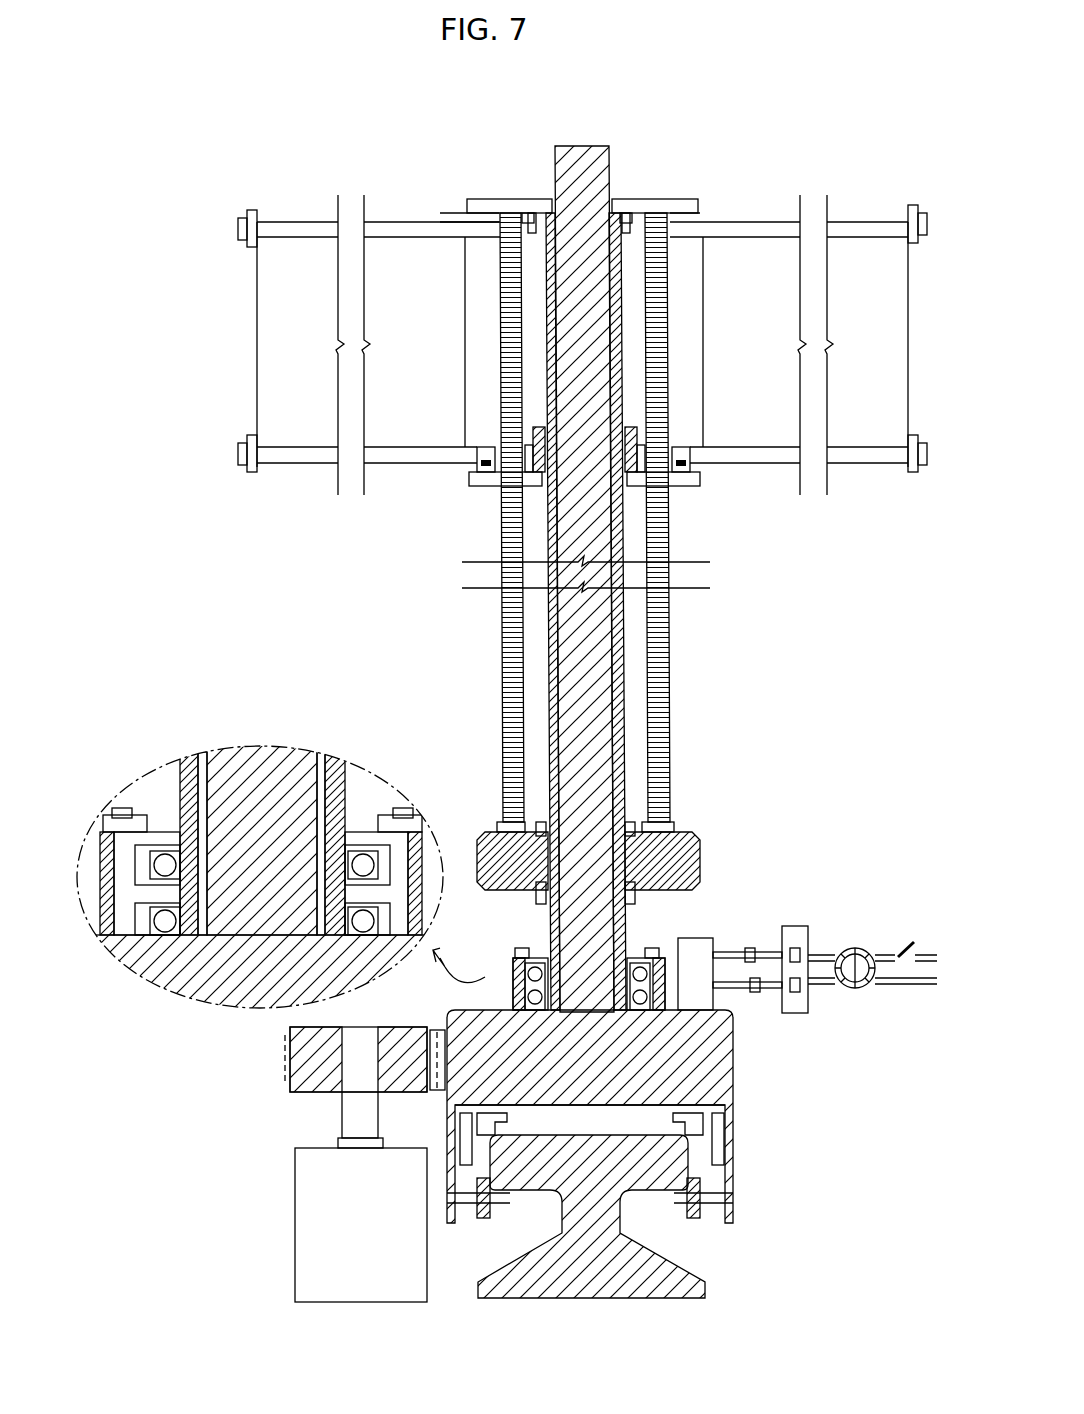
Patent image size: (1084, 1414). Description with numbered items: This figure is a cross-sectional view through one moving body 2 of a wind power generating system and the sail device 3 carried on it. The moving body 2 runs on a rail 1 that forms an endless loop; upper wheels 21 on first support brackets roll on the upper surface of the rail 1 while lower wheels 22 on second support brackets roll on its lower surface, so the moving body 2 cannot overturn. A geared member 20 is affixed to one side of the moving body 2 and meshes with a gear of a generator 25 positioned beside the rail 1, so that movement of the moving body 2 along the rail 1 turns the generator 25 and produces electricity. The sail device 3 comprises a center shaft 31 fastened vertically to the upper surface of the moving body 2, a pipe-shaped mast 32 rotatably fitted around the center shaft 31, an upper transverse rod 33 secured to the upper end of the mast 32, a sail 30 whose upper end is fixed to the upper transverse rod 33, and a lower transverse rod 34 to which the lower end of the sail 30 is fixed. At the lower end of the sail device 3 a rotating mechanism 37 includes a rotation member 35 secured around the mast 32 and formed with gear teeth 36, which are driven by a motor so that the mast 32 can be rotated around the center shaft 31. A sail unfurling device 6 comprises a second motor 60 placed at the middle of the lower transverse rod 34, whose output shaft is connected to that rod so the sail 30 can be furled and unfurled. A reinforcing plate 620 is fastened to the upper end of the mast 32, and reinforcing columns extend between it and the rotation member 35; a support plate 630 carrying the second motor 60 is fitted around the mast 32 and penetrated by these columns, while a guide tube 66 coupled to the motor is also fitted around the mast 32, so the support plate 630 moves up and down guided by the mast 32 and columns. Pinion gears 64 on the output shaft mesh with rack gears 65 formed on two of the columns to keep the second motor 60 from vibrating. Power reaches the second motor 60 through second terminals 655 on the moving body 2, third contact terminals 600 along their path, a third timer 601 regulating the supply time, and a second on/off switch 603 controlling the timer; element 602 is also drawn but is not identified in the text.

The rail 1 is at (713, 1289).
The moving body 2 is at (738, 1076).
The sail device 3 is at (376, 568).
The sail unfurling device 6 is at (464, 514).
The geared member 20 is at (432, 1024).
The upper wheel 21 is at (703, 1150).
The lower wheel 22 is at (700, 1212).
The generator 25 is at (295, 1213).
The sail 30 is at (257, 345).
The center shaft 31 is at (581, 152).
The mast 32 is at (620, 290).
The upper transverse rod 33 is at (290, 222).
The lower transverse rod 34 is at (306, 467).
The rotation member 35 is at (720, 831).
The gear teeth 36 is at (702, 862).
The rotating mechanism 37 is at (760, 763).
The second motor 60 is at (505, 427).
The pinion gear 64 is at (490, 447).
The rack gear 65 is at (503, 632).
The guide tube 66 is at (672, 428).
The third contact terminal 600 is at (752, 950).
The third timer 601 is at (862, 988).
The guide rod 602 is at (772, 990).
The second on/off switch 603 is at (920, 948).
The reinforcing plate 620 is at (645, 199).
The support plate 630 is at (700, 482).
The second terminal 655 is at (740, 955).